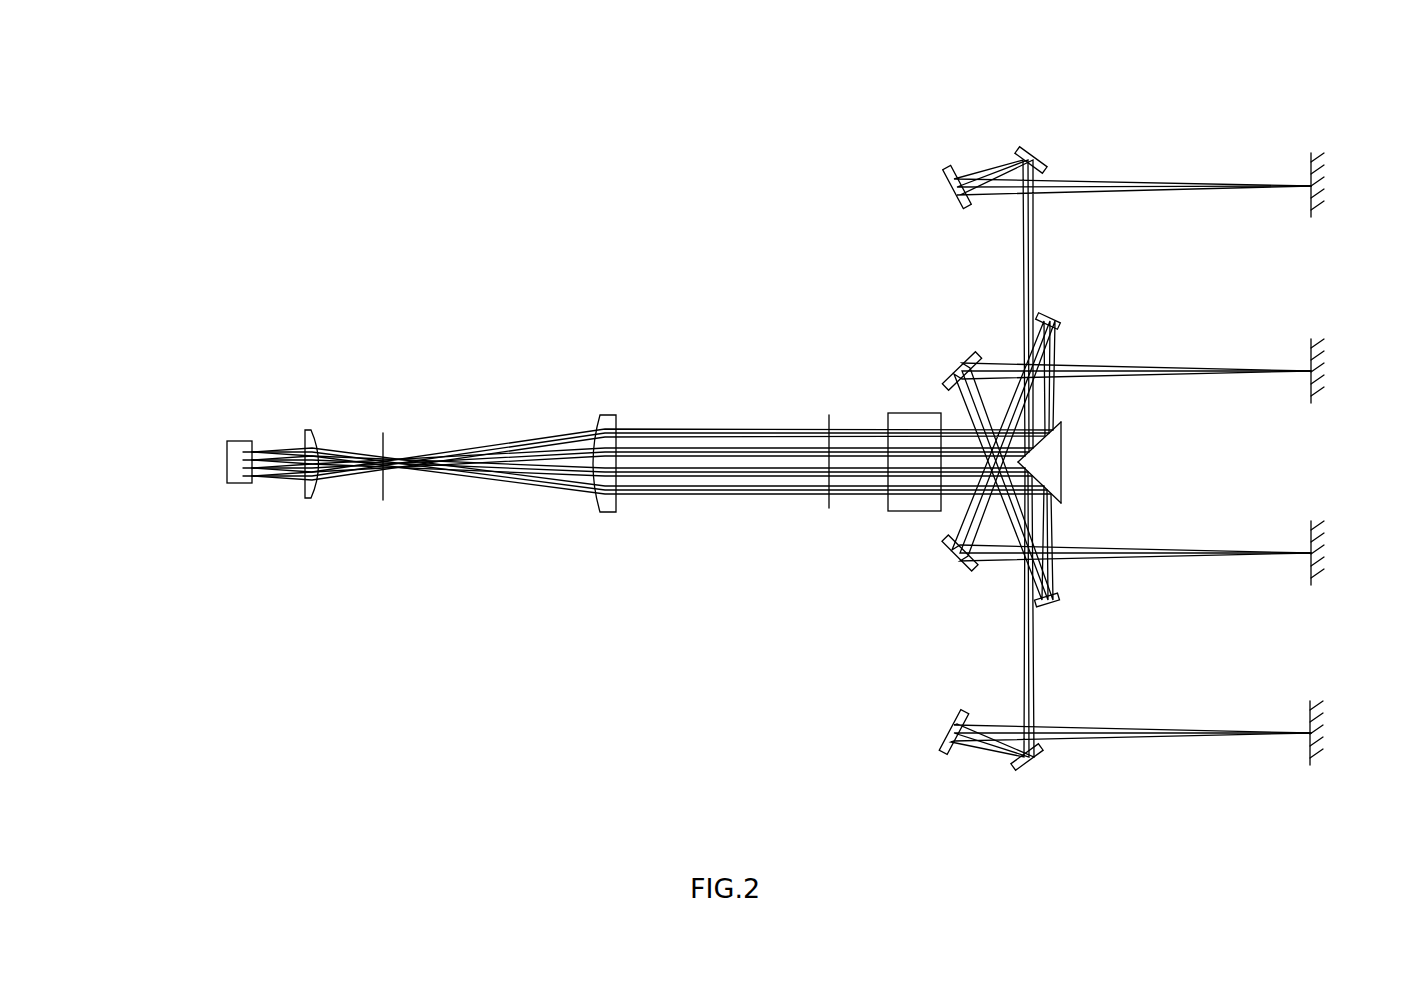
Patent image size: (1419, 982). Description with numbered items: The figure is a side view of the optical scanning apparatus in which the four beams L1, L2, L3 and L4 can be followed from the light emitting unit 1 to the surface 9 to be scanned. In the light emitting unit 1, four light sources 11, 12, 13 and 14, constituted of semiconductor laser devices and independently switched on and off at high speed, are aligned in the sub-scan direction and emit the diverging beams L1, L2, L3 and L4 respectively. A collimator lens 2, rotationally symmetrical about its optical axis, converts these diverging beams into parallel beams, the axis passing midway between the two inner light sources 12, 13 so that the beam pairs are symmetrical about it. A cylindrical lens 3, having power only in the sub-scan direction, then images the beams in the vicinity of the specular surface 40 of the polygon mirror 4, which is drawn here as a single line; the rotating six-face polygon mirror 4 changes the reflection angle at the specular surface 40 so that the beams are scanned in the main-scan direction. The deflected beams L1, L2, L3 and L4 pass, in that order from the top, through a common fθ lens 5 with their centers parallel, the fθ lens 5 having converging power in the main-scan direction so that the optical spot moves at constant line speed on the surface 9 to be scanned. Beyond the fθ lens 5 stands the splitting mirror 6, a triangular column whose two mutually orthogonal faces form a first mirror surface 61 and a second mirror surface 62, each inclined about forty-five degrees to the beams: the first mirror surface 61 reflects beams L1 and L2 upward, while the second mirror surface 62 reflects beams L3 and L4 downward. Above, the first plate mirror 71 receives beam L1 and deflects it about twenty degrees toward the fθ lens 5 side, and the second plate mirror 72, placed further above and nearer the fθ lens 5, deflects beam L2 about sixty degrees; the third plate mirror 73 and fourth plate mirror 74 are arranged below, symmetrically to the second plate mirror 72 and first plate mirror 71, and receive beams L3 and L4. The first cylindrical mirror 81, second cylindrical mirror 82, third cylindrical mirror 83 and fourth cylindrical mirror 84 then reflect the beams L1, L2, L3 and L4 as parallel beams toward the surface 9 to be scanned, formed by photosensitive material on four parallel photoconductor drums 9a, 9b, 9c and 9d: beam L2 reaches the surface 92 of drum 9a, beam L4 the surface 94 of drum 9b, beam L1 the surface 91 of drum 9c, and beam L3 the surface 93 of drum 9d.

The light emitting unit 1 is at (195, 463).
The light source 11 is at (237, 477).
The light source 12 is at (240, 468).
The light source 13 is at (240, 460).
The light source 14 is at (240, 452).
The collimator lens 2 is at (311, 498).
The cylindrical lens 3 is at (605, 512).
The polygon mirror 4 is at (810, 580).
The specular surface 40 is at (828, 508).
The fθ lens 5 is at (910, 511).
The splitting mirror 6 is at (1077, 456).
The first mirror surface 61 is at (1062, 428).
The second mirror surface 62 is at (1062, 498).
The first plate mirror 71 is at (1048, 316).
The second plate mirror 72 is at (1037, 153).
The third plate mirror 73 is at (1029, 765).
The fourth plate mirror 74 is at (1047, 606).
The first cylindrical mirror 81 is at (968, 571).
The second cylindrical mirror 82 is at (951, 168).
The third cylindrical mirror 83 is at (948, 752).
The fourth cylindrical mirror 84 is at (968, 354).
The surface to be scanned 9 is at (1329, 422).
The photoconductor drum 9a is at (1335, 201).
The photoconductor drum 9b is at (1329, 388).
The photoconductor drum 9c is at (1330, 571).
The photoconductor drum 9d is at (1332, 750).
The surface to be scanned 91 is at (1306, 578).
The surface to be scanned 92 is at (1310, 208).
The surface to be scanned 93 is at (1308, 758).
The surface to be scanned 94 is at (1306, 396).
The beam L1 is at (670, 432).
The beam L2 is at (628, 447).
The beam L3 is at (633, 480).
The beam L4 is at (672, 494).